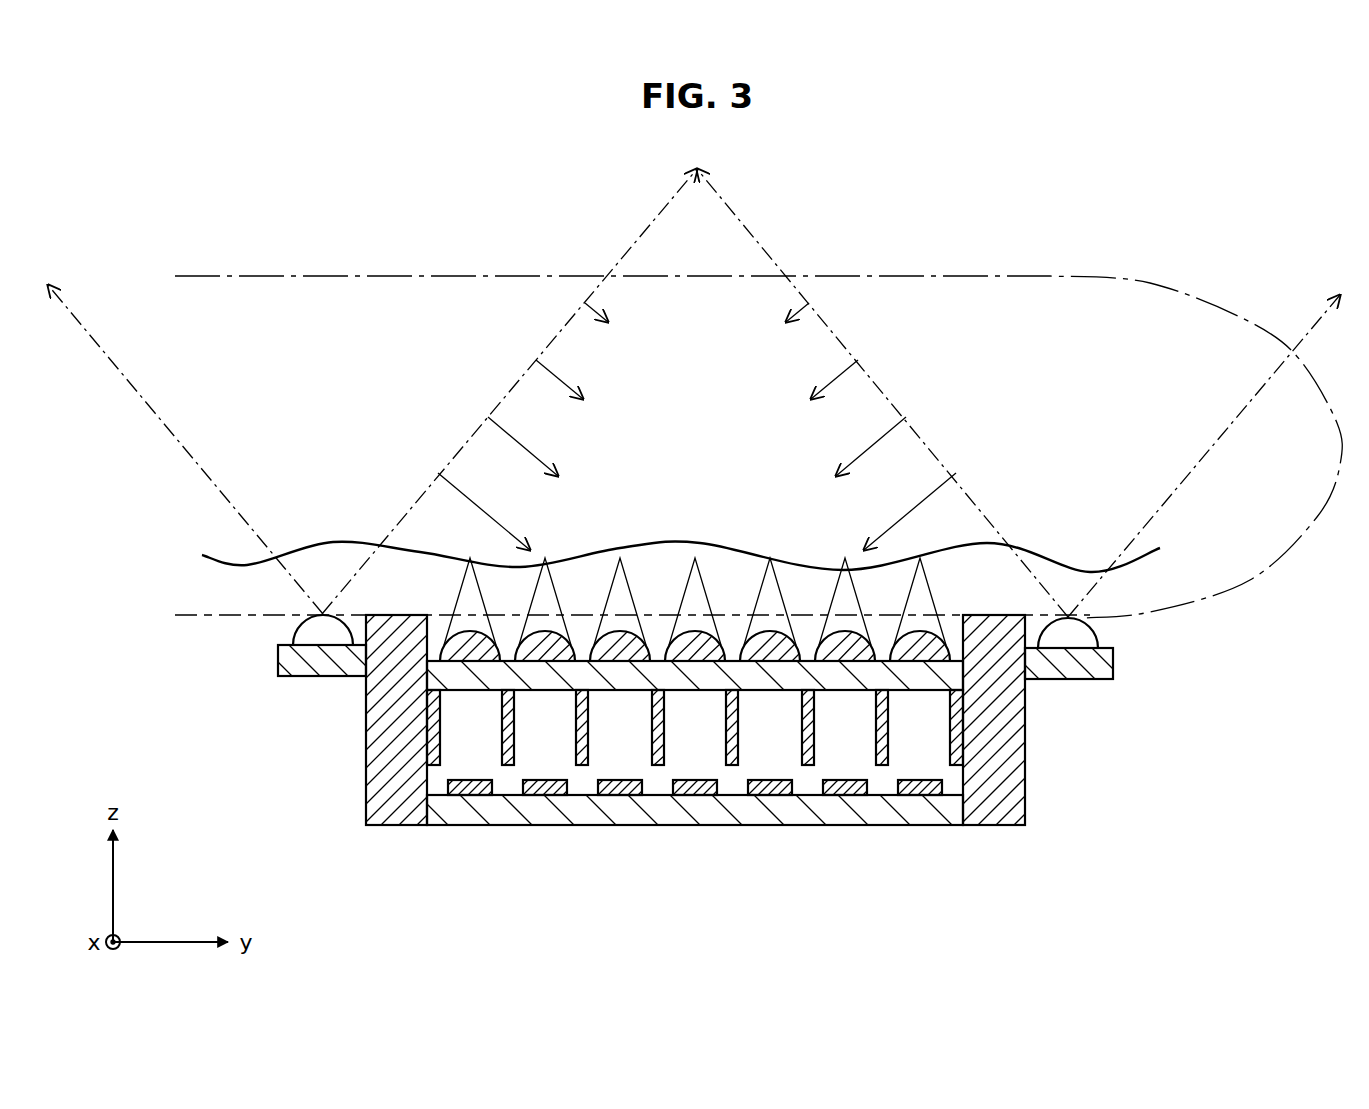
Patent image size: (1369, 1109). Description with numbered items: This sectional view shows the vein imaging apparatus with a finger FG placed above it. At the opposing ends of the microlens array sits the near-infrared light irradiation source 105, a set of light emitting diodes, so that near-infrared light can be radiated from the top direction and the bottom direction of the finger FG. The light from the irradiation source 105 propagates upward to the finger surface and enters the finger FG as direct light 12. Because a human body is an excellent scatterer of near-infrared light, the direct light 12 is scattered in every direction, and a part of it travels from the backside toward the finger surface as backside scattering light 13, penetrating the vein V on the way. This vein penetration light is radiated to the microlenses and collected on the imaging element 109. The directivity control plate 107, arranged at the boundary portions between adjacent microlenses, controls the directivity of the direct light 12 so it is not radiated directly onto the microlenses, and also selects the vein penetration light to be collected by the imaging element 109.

The direct light 12 is at (345, 318).
The backside scattering light 13 is at (697, 488).
The near-infrared light irradiation source 105 is at (320, 678).
The directivity control plate 107 is at (366, 808).
The imaging element 109 is at (470, 796).
The finger FG is at (887, 277).
The vein V is at (1025, 545).